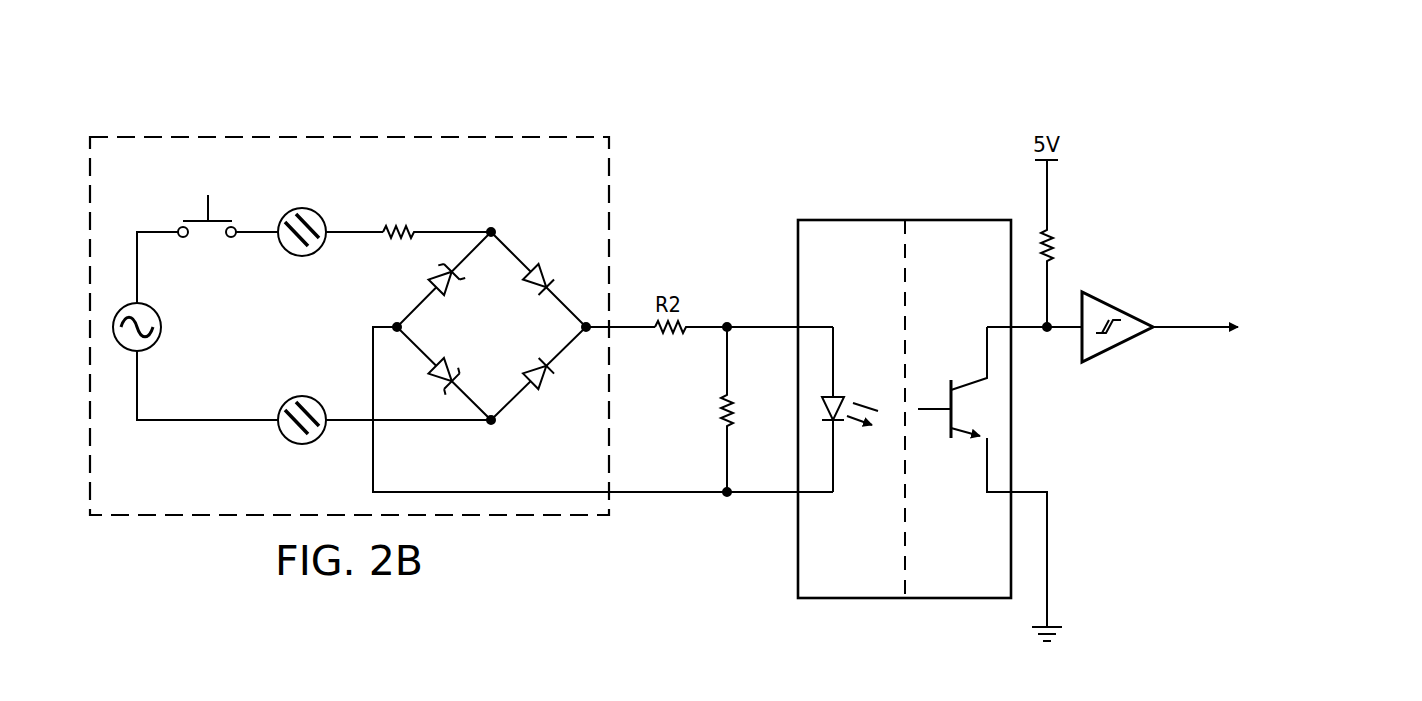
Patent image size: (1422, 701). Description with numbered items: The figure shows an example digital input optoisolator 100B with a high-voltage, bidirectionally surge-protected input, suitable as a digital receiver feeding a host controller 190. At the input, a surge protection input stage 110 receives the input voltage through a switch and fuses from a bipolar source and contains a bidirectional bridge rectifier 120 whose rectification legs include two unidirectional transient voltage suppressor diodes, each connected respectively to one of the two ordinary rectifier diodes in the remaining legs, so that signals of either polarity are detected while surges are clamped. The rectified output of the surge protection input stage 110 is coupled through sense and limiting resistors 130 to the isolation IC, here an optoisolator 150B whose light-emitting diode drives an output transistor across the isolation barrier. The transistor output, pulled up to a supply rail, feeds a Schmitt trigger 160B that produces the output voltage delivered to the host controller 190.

The digital input optoisolator 100B is at (886, 88).
The surge protection input stage 110 is at (259, 131).
The bridge rectifier 120 is at (512, 343).
The sense resistors 130 is at (703, 323).
The optoisolator 150B is at (955, 607).
The Schmitt trigger 160B is at (1119, 307).
The host controller 190 is at (1337, 355).